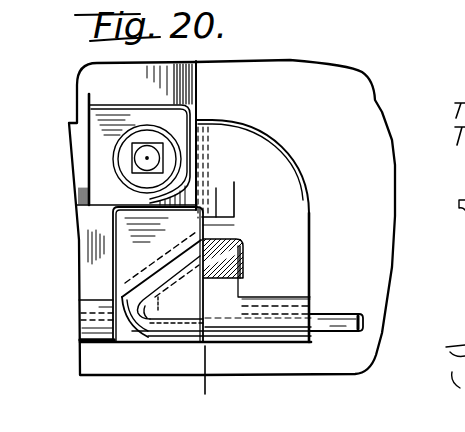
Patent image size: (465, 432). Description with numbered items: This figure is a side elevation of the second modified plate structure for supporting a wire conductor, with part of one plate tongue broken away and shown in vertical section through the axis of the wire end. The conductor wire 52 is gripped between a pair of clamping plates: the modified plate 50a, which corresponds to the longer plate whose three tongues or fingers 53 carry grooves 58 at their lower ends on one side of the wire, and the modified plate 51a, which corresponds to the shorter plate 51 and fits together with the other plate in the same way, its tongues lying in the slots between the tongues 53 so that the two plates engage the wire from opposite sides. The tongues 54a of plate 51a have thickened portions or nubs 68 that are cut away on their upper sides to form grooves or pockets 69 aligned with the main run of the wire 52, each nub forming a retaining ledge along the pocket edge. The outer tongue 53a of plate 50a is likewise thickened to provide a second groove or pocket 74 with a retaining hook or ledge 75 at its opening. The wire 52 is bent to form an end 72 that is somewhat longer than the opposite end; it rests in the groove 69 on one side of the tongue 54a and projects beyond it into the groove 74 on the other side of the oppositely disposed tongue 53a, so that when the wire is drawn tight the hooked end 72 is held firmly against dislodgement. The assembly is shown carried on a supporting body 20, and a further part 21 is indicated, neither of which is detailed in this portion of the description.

The housing body 20 is at (120, 72).
The modified clamping plate 51a is at (70, 151).
The clamping plate 51 is at (137, 161).
The modified clamping plate 50a is at (309, 212).
The tongue 54a is at (113, 222).
The tongue 53 is at (84, 275).
The spindle pin 21 is at (252, 180).
The retaining hook 75 is at (241, 242).
The second groove 74 is at (240, 261).
The nub 68 is at (187, 301).
The groove 69 is at (160, 318).
The wire end 72 is at (141, 338).
The groove 58 is at (139, 337).
The tongue 53a is at (287, 272).
The conductor wire 52 is at (357, 314).